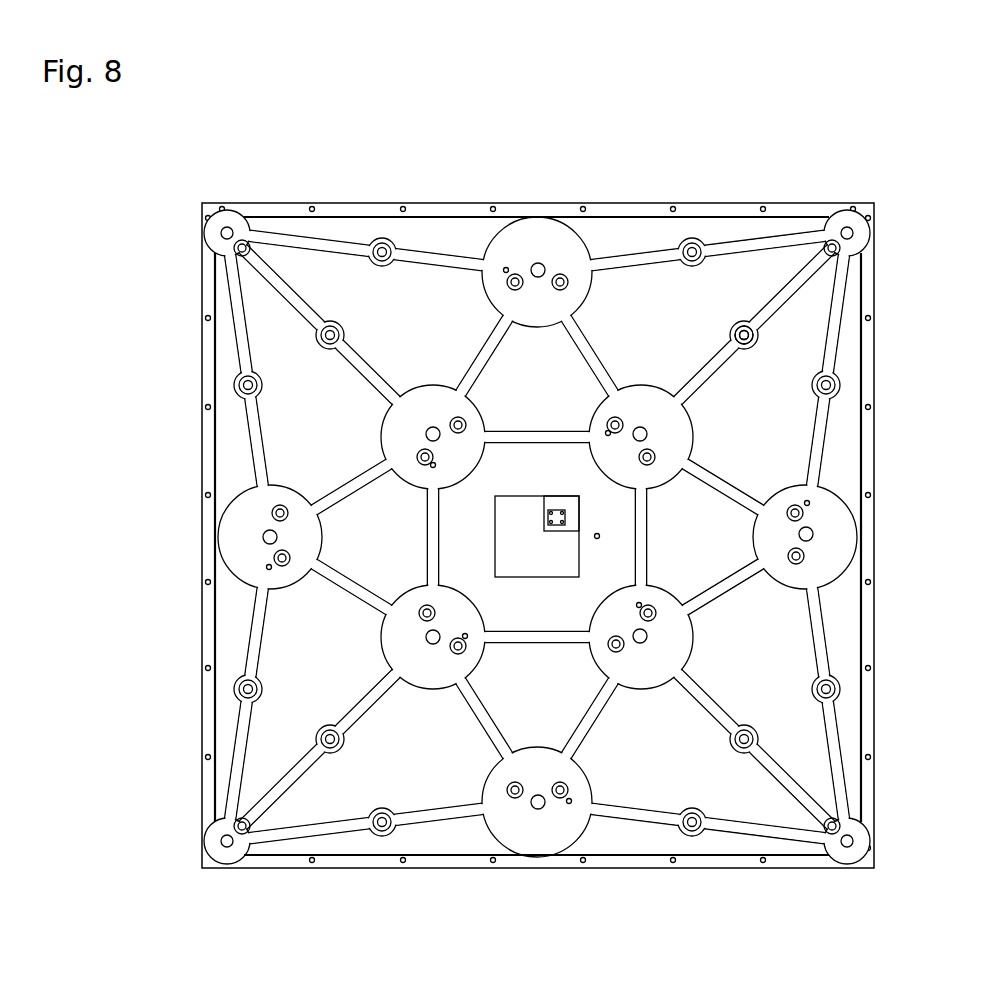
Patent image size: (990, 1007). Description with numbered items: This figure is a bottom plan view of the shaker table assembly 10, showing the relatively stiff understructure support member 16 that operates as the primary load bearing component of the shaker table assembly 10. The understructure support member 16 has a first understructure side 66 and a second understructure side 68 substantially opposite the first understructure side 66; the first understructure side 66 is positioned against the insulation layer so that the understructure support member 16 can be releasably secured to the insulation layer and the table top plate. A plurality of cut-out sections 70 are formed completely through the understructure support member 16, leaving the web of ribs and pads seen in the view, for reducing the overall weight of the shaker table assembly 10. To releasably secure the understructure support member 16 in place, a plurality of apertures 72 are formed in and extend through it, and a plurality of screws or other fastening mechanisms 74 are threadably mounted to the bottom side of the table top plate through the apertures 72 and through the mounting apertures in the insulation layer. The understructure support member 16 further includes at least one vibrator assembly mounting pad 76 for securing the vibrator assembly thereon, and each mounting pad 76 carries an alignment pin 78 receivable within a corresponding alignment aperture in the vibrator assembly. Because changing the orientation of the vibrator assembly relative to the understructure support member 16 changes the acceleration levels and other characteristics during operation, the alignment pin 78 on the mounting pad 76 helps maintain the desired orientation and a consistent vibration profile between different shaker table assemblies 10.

The shaker table assembly 10 is at (574, 481).
The understructure support member 16 is at (593, 524).
The first understructure side 66 is at (696, 189).
The second understructure side 68 is at (820, 435).
The cut-out sections 70 is at (765, 393).
The apertures 72 is at (338, 275).
The screws or other fastening mechanisms 74 is at (548, 273).
The vibrator assembly mounting pad 76 is at (266, 369).
The alignment pin 78 is at (280, 714).